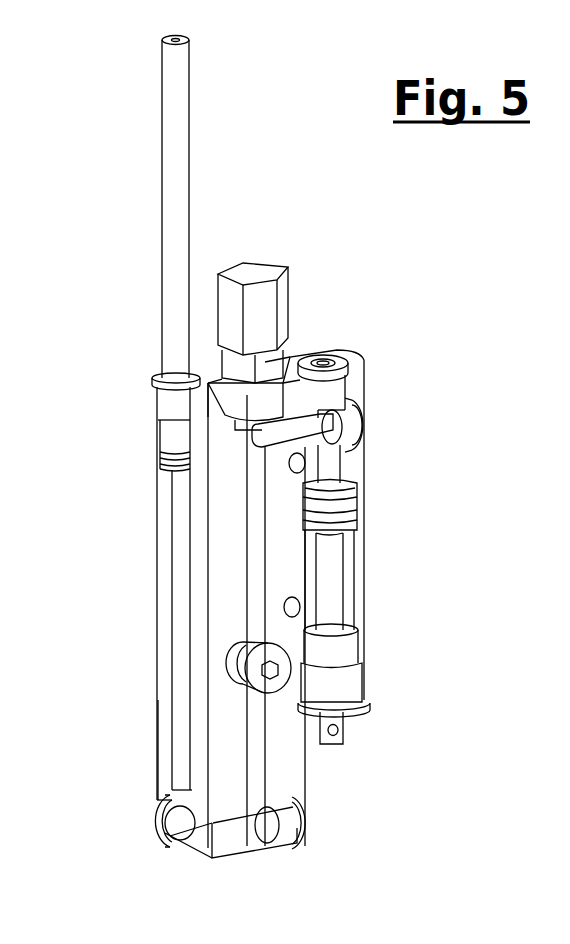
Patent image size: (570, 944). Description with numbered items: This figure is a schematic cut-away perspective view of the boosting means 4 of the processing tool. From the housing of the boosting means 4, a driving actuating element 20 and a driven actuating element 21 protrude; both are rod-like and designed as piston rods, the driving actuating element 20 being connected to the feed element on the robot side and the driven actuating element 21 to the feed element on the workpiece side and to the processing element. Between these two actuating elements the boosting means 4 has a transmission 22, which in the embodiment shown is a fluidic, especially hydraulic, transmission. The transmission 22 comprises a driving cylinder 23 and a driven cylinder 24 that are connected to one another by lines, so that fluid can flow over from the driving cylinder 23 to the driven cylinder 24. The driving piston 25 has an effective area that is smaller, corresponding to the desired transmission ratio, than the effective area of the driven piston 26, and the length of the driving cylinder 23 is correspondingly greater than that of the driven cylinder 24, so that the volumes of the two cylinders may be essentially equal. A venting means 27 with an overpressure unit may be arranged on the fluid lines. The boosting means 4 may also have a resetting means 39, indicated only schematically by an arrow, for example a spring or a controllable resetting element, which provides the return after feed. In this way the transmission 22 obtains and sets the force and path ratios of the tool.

The boosting means 4 is at (398, 347).
The driving actuating element 20 is at (180, 193).
The driven actuating element 21 is at (340, 743).
The transmission 22 is at (155, 737).
The driving cylinder 23 is at (167, 563).
The driven cylinder 24 is at (365, 612).
The driving piston 25 is at (173, 440).
The driven piston 26 is at (362, 520).
The venting means 27 is at (258, 268).
The resetting means 39 is at (153, 662).